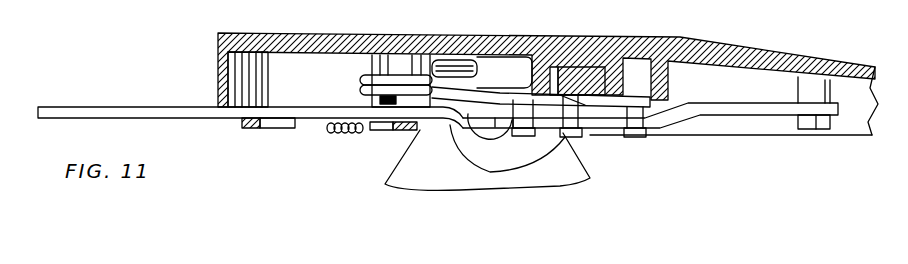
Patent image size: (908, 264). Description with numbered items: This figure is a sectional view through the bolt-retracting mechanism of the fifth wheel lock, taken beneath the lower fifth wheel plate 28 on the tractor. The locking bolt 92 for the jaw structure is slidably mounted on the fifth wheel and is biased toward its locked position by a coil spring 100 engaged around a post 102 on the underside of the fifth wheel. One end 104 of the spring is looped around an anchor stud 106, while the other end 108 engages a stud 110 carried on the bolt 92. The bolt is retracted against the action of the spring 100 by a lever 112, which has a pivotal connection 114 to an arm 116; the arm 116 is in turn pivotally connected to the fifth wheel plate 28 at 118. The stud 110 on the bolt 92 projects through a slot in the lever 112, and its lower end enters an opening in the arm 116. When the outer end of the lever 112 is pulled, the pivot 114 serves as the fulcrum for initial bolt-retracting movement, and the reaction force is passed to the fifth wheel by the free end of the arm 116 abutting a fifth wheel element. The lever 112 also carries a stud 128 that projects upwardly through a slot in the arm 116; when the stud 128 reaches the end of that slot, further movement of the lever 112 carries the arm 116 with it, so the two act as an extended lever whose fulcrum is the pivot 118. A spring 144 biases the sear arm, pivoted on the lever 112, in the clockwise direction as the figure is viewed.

The lower fifth wheel plate 28 is at (232, 46).
The locking bolt 92 is at (572, 74).
The coil spring 100 is at (362, 80).
The post 102 is at (398, 62).
The spring end 104 is at (452, 62).
The anchor stud 106 is at (488, 60).
The spring end 108 is at (590, 102).
The stud 110 is at (596, 96).
The lever 112 is at (300, 120).
The pivotal connection 114 is at (640, 139).
The arm 116 is at (738, 108).
The pivot 118 is at (805, 130).
The stud 128 is at (525, 137).
The spring 144 is at (331, 132).